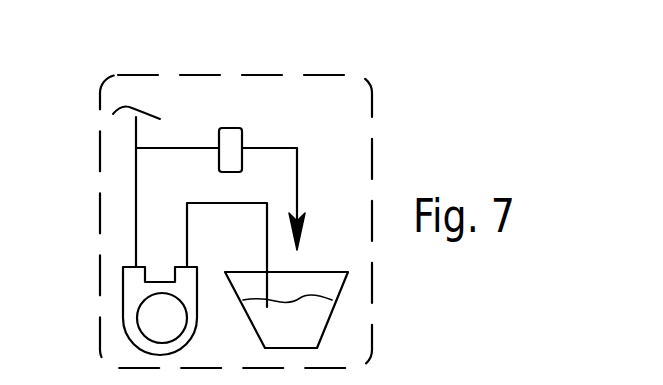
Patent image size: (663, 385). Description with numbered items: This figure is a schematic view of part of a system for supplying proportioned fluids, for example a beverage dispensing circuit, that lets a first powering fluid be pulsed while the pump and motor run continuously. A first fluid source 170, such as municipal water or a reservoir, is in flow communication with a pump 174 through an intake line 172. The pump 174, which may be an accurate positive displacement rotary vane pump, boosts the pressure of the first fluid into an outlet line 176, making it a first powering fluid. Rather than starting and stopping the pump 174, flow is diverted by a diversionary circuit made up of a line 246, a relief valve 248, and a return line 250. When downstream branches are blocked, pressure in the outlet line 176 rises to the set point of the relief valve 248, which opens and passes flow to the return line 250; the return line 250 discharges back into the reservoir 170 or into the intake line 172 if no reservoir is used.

The first fluid source 170 is at (330, 320).
The intake line 172 is at (213, 203).
The pump 174 is at (150, 320).
The outlet line 176 is at (133, 165).
The line 246 is at (175, 148).
The relief valve 248 is at (233, 128).
The return line 250 is at (297, 184).